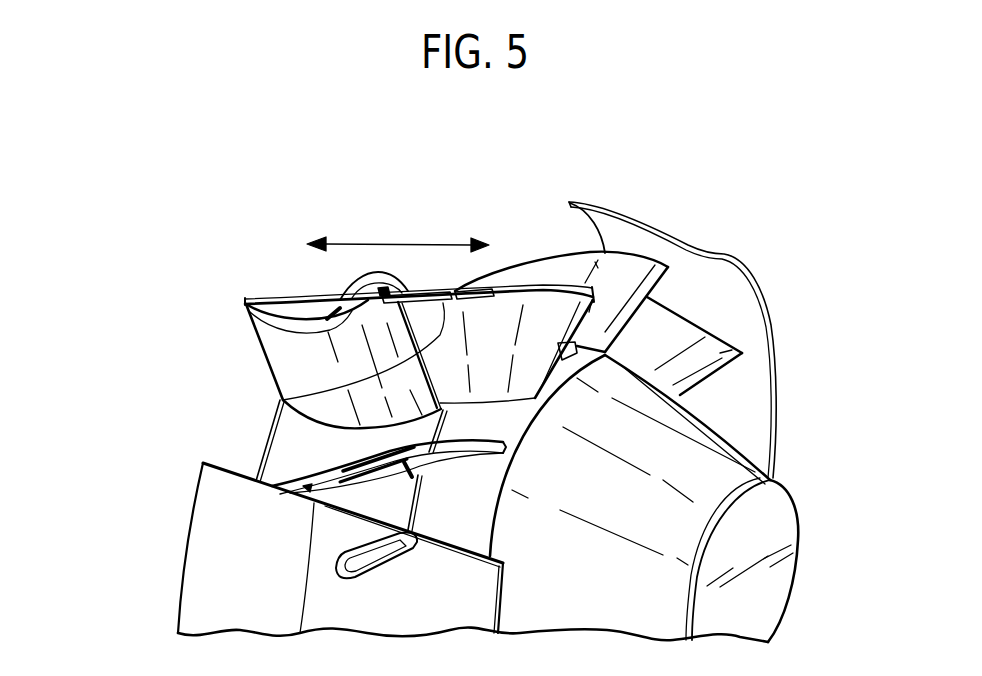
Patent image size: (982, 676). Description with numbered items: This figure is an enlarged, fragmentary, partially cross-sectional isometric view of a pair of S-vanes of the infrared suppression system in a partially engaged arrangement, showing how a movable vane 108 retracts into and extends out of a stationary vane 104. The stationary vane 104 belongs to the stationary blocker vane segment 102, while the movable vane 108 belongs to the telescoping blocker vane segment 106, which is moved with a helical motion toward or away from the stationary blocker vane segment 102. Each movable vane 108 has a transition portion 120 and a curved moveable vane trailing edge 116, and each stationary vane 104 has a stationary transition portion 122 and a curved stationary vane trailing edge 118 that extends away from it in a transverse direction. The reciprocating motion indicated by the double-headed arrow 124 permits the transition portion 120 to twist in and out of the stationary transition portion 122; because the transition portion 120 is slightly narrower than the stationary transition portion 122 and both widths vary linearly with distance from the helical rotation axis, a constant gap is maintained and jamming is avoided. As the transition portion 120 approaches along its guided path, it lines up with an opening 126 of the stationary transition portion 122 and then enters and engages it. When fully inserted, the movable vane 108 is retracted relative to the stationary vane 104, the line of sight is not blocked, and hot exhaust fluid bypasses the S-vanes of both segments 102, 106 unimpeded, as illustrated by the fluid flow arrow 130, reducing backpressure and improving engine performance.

The stationary blocker vane segment 102 is at (167, 590).
The stationary vane 104 is at (254, 333).
The telescoping blocker vane segment 106 is at (785, 312).
The movable vane 108 is at (540, 287).
The moveable vane trailing edge 116 is at (565, 293).
The stationary vane trailing edge 118 is at (317, 357).
The transition portion 120 is at (347, 277).
The stationary transition portion 122 is at (277, 313).
The double-headed arrow 124 is at (392, 244).
The opening 126 is at (290, 394).
The fluid flow arrow 130 is at (553, 434).